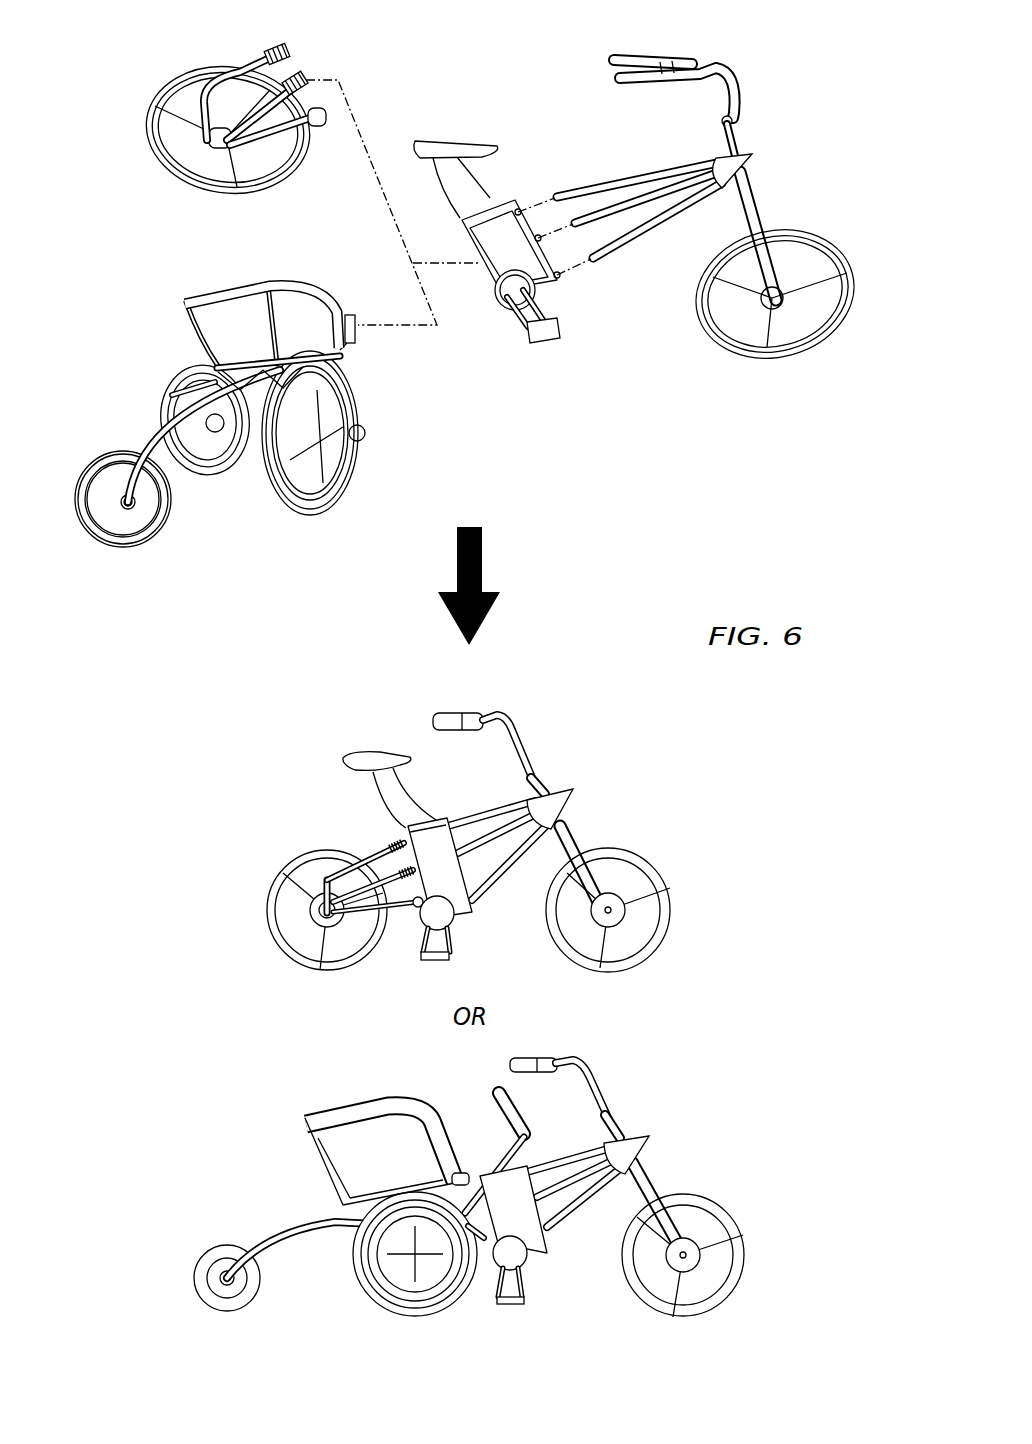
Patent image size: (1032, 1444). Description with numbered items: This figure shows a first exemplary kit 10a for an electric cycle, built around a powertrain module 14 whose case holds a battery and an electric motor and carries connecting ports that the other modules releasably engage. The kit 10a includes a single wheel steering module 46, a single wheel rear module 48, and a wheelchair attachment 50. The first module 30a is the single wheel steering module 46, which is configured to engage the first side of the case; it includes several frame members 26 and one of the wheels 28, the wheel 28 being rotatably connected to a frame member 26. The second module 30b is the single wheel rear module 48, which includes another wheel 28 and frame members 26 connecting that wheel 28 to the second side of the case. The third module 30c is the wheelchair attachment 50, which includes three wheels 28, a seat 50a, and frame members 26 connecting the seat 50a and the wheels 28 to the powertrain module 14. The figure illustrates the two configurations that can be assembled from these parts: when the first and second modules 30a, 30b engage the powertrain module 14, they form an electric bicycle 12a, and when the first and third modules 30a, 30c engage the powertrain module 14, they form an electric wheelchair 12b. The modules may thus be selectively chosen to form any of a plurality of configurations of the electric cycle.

The kit 10a is at (843, 67).
The electric bicycle 12a is at (273, 738).
The electric wheelchair 12b is at (243, 1112).
The powertrain module 14 is at (457, 138).
The frame member 26 is at (620, 252).
The wheel 28 is at (803, 343).
The first module 30a is at (717, 53).
The second module 30b is at (158, 67).
The third module 30c is at (185, 267).
The single wheel steering module 46 is at (750, 157).
The single wheel rear module 48 is at (252, 58).
The wheelchair attachment 50 is at (353, 402).
The seat 50a is at (267, 283).